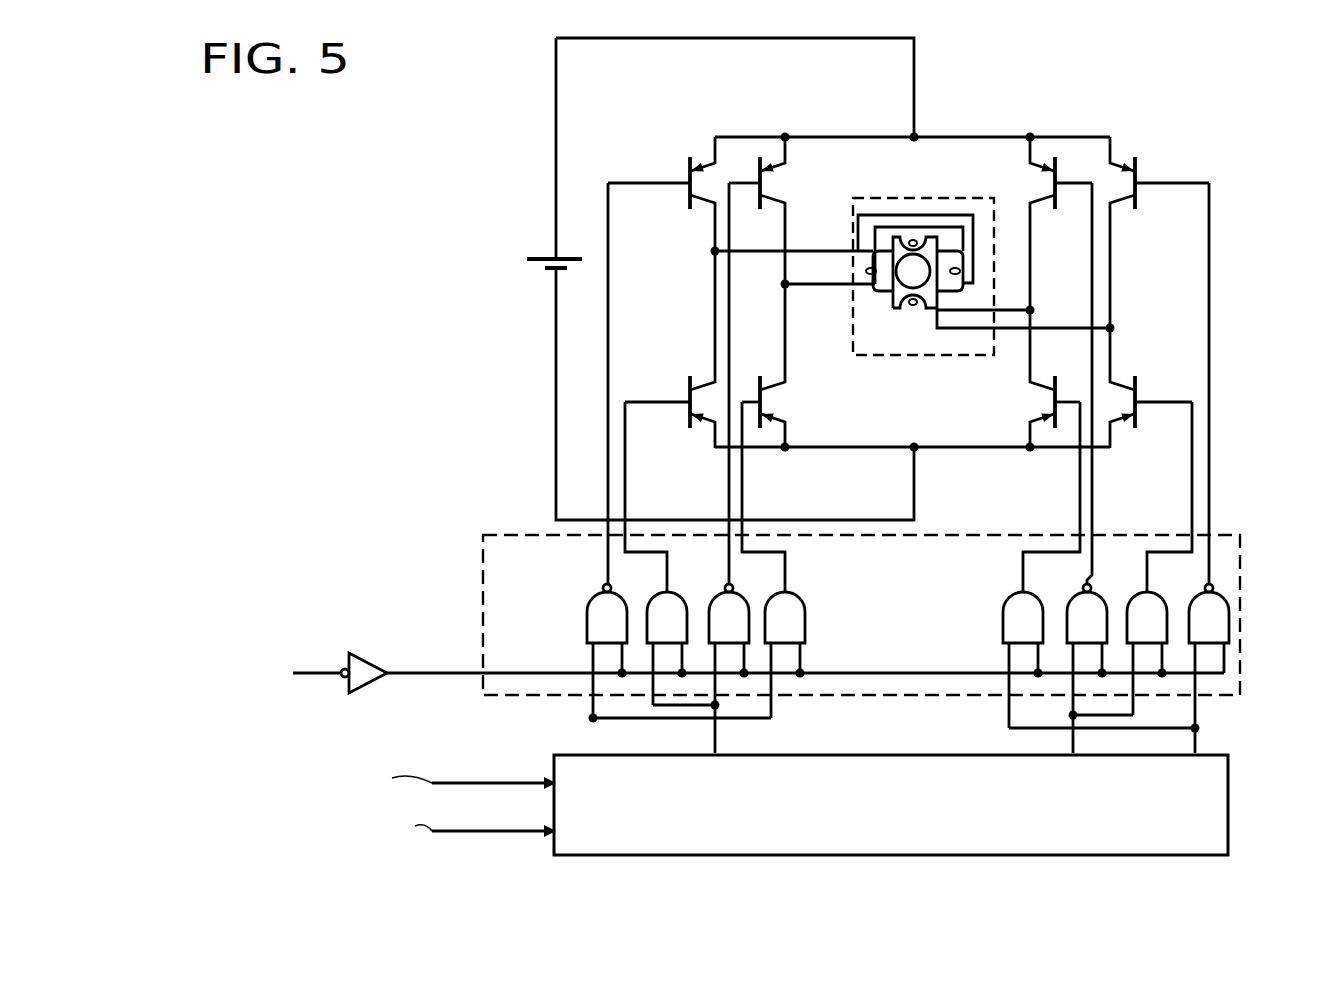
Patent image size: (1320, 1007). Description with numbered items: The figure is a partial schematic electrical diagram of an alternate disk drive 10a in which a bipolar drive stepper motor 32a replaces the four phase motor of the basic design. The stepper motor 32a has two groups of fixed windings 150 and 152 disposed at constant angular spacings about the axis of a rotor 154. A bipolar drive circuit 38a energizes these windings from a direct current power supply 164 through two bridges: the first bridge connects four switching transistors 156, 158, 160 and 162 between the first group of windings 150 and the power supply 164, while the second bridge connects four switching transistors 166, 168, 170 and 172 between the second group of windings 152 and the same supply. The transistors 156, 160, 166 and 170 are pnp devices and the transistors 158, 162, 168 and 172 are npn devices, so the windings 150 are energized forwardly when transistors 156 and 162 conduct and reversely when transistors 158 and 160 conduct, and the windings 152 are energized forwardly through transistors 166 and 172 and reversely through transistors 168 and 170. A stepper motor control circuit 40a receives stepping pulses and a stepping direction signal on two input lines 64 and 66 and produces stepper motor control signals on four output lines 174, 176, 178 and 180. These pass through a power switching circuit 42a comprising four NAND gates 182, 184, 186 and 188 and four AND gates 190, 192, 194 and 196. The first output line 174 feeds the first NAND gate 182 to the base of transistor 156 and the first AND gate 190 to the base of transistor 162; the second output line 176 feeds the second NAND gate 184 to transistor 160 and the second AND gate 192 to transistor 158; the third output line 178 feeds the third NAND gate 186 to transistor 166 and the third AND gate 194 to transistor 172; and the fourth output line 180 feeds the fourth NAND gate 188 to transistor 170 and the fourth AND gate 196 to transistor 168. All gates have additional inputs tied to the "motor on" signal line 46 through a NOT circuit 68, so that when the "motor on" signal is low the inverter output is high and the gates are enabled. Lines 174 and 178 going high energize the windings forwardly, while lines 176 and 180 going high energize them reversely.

The disk drive 10a is at (410, 232).
The bipolar drive circuit 38a is at (1097, 120).
The bipolar drive stepper motor 32a is at (954, 279).
The stepper motor control circuit 40a is at (1238, 786).
The power switching circuit 42a is at (481, 588).
The "motor on" signal line 46 is at (312, 676).
The output line of stepping signal selector circuit 64 is at (480, 785).
The output line of stepping signal selector circuit 66 is at (480, 833).
The NOT circuit 68 is at (380, 694).
The fixed windings 150 is at (957, 250).
The fixed windings 152 is at (913, 240).
The rotor 154 is at (905, 277).
The first transistor 156 is at (698, 190).
The second transistor 158 is at (691, 408).
The third transistor 160 is at (770, 190).
The fourth transistor 162 is at (776, 396).
The direct current power supply 164 is at (545, 258).
The fifth transistor 166 is at (1034, 166).
The sixth transistor 168 is at (1045, 388).
The seventh transistor 170 is at (1137, 190).
The eighth transistor 172 is at (1137, 414).
The first output line 174 is at (597, 745).
The second output line 176 is at (720, 742).
The third output line 178 is at (1010, 728).
The fourth output line 180 is at (1196, 729).
The first NAND gate 182 is at (592, 604).
The second NAND gate 184 is at (713, 604).
The third NAND gate 186 is at (1070, 604).
The fourth NAND gate 188 is at (1192, 604).
The first AND gate 190 is at (770, 604).
The second AND gate 192 is at (653, 604).
The third AND gate 194 is at (1132, 604).
The fourth AND gate 196 is at (1005, 604).